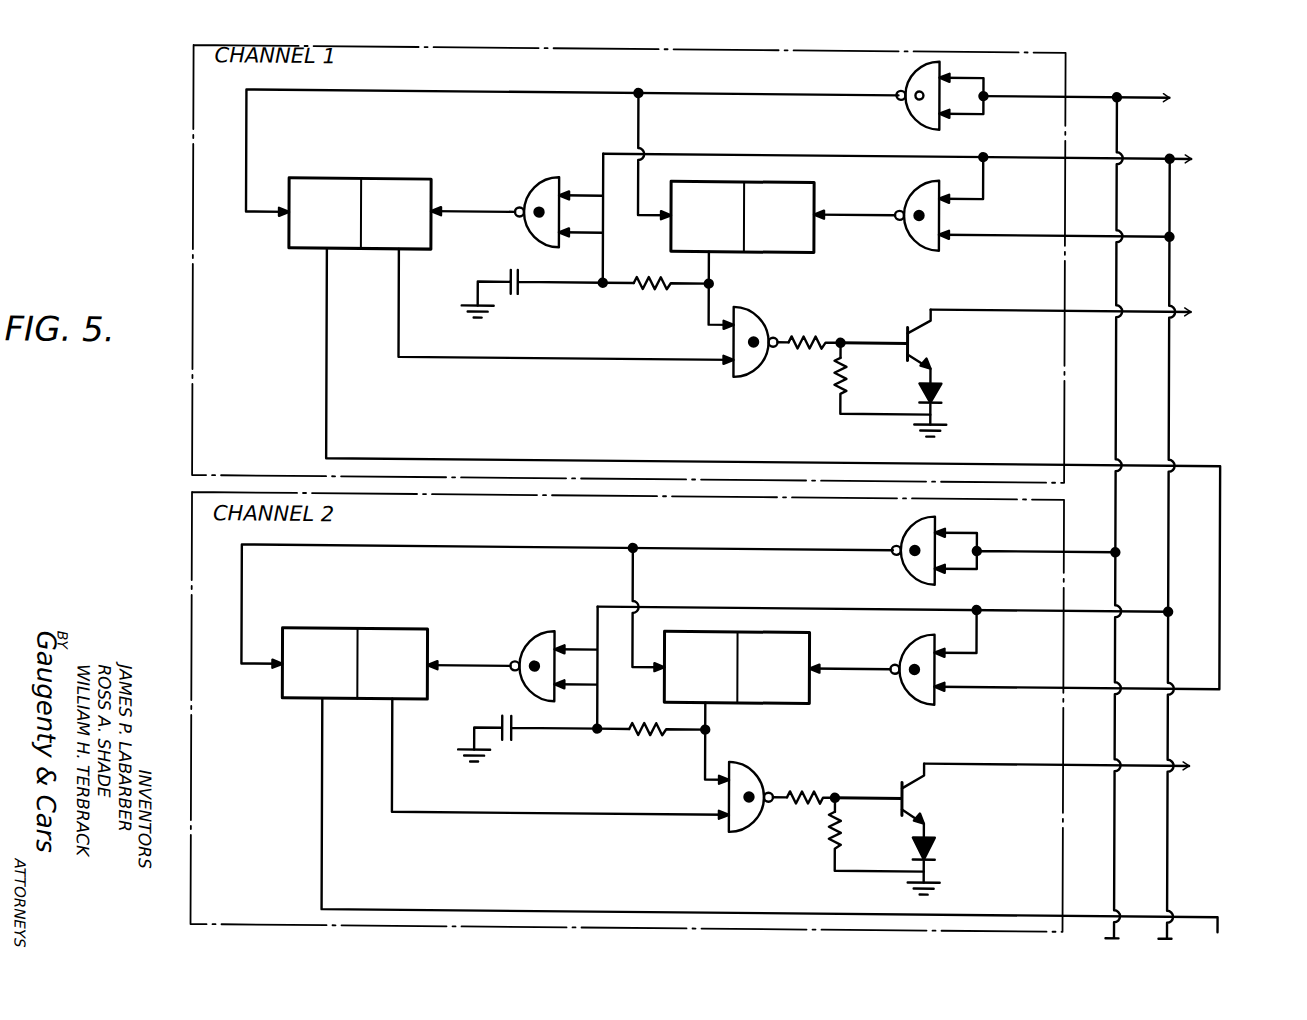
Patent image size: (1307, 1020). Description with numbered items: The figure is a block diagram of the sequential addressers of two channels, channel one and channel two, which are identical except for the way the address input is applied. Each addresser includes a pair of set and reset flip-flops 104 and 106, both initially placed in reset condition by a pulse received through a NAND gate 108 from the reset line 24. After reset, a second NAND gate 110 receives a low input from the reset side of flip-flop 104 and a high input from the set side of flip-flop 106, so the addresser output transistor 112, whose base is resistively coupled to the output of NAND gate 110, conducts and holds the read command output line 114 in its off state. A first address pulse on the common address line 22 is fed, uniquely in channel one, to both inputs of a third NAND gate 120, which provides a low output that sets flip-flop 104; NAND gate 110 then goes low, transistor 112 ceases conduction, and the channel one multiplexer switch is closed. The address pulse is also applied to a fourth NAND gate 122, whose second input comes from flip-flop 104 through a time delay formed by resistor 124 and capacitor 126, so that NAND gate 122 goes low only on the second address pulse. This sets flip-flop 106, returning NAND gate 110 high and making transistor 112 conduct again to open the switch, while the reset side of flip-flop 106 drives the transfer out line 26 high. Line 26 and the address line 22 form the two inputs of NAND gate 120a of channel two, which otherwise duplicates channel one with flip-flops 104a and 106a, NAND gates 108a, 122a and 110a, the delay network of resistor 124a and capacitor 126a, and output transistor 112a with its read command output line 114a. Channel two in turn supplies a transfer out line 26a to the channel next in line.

The address line 22 is at (1186, 149).
The reset line 24 is at (1142, 86).
The transfer out line 26 is at (1221, 560).
The transfer out line 26a is at (1200, 907).
The flip-flop 104 is at (814, 243).
The flip-flop 104a is at (757, 699).
The flip-flop 106 is at (353, 176).
The flip-flop 106a is at (352, 601).
The NAND gate 108 is at (915, 70).
The NAND gate 108a is at (914, 522).
The NAND gate 110 is at (757, 305).
The NAND gate 110a is at (752, 762).
The addresser output transistor 112 is at (912, 340).
The addresser output transistor 112a is at (905, 787).
The read command output line 114 is at (1020, 302).
The read command output line 114a is at (974, 757).
The NAND gate 120 is at (920, 178).
The NAND gate 120a is at (915, 698).
The NAND gate 122 is at (540, 178).
The NAND gate 122a is at (541, 631).
The resistor 124 is at (656, 286).
The resistor 124a is at (643, 733).
The capacitor 126 is at (514, 268).
The capacitor 126a is at (506, 740).